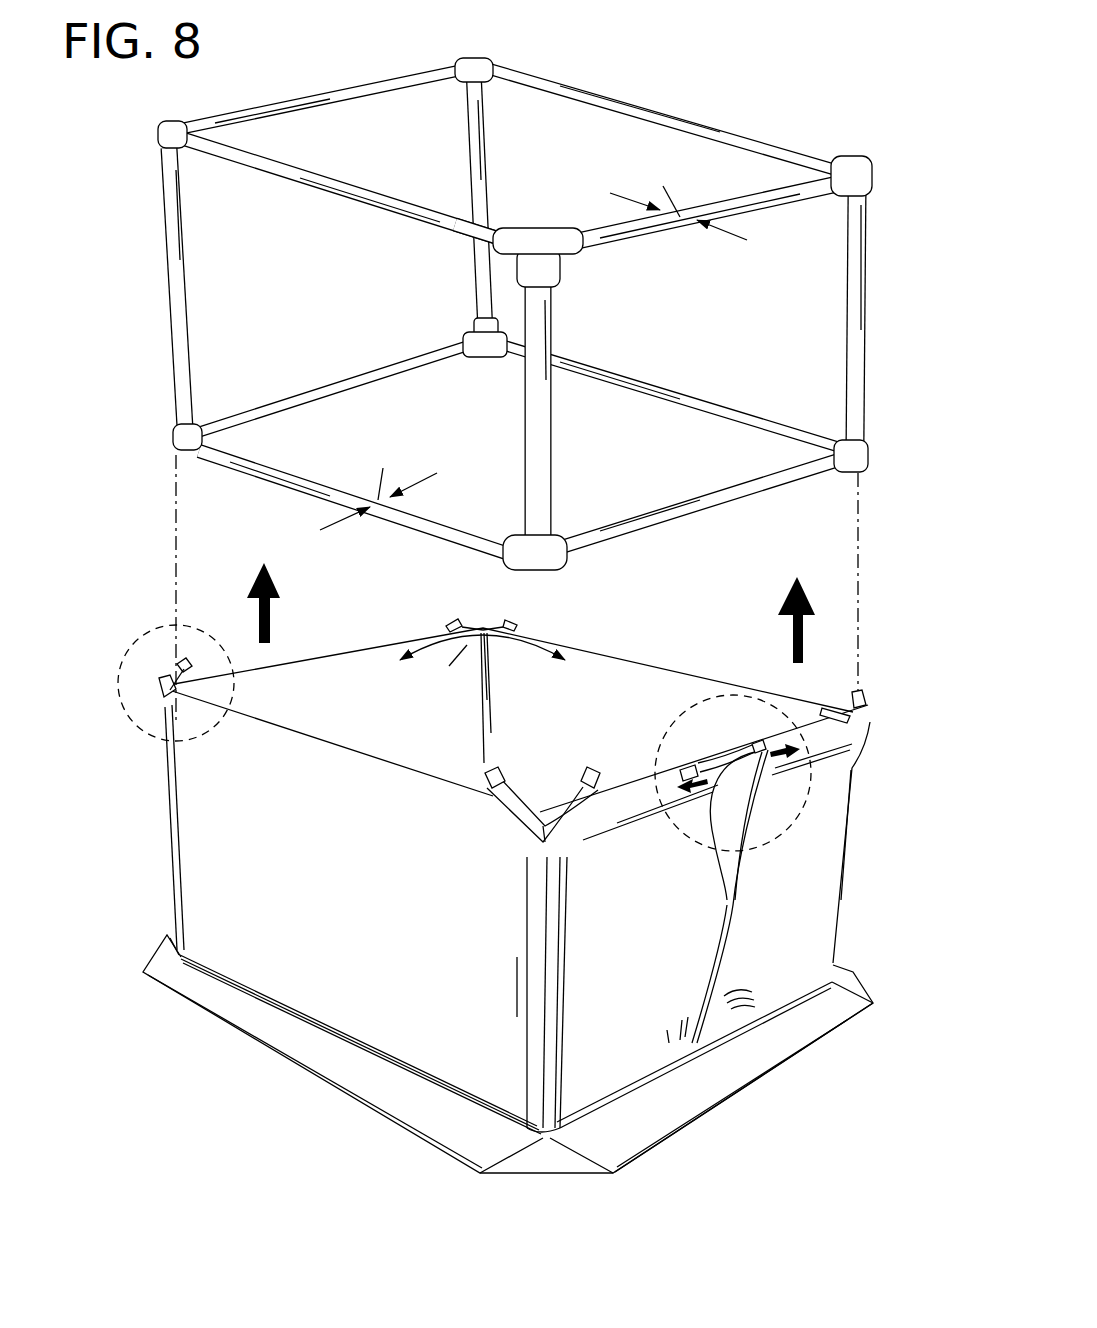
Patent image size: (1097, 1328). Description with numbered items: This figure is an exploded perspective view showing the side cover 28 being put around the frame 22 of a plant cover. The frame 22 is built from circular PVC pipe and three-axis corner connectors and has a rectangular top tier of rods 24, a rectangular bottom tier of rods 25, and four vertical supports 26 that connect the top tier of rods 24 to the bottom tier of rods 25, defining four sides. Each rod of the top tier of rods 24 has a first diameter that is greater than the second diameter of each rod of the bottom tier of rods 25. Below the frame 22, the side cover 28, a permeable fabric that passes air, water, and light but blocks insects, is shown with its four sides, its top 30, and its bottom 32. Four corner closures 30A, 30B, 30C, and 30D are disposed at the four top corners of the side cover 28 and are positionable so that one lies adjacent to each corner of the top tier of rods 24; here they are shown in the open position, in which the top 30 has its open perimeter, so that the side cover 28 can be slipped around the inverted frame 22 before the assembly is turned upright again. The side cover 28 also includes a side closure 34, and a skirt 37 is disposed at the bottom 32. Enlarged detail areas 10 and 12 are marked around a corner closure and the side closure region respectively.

The area 10 is at (150, 668).
The area 12 is at (736, 869).
The frame 22 is at (517, 289).
The top tier of rods 24 is at (597, 83).
The bottom tier of rods 25 is at (733, 397).
The vertical supports 26 is at (166, 237).
The side cover 28 is at (499, 869).
The top 30 is at (603, 655).
The corner closure 30A is at (167, 682).
The corner closure 30B is at (543, 821).
The corner closure 30C is at (860, 710).
The corner closure 30D is at (484, 625).
The bottom 32 is at (333, 1035).
The side closure 34 is at (745, 772).
The skirt 37 is at (717, 1070).